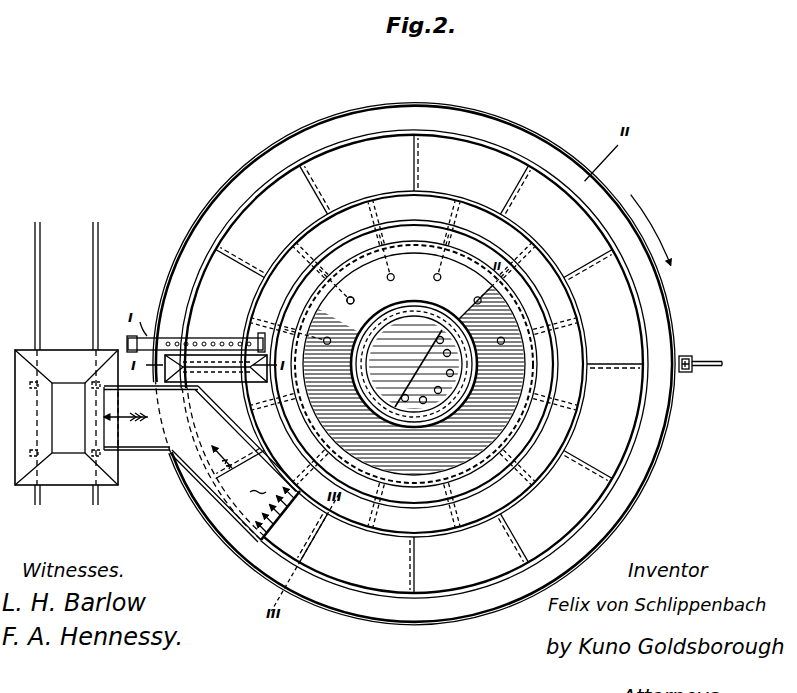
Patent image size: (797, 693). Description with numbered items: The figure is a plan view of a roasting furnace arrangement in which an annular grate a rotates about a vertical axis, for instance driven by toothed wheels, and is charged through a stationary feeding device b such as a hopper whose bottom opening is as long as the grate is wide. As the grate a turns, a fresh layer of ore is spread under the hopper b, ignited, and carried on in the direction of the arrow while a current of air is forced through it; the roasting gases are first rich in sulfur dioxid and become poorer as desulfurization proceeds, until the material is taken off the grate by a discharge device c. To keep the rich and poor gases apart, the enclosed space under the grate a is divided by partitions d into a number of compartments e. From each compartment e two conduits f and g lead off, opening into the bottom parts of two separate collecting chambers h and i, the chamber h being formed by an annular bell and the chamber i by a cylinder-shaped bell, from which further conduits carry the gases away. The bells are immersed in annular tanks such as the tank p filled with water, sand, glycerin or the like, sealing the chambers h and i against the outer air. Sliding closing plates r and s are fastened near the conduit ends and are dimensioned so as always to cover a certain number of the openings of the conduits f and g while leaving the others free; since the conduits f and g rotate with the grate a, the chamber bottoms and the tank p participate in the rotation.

The annular grate a is at (215, 223).
The stationary feeding device b is at (247, 382).
The discharge device c is at (193, 450).
The partitions d is at (428, 373).
The compartments e is at (413, 364).
The conduit f is at (434, 276).
The conduit g is at (443, 357).
The chamber h is at (343, 313).
The chamber i is at (422, 390).
The annular tank p is at (396, 250).
The sliding closing plate r is at (526, 418).
The sliding closing plate s is at (414, 364).